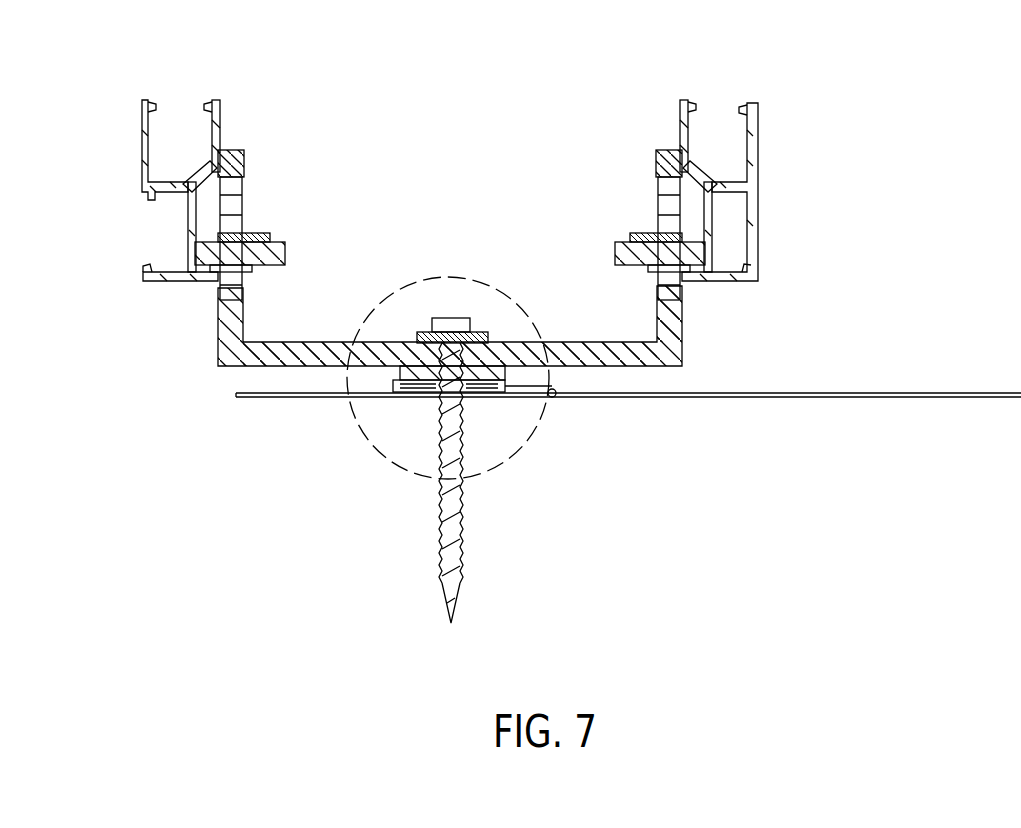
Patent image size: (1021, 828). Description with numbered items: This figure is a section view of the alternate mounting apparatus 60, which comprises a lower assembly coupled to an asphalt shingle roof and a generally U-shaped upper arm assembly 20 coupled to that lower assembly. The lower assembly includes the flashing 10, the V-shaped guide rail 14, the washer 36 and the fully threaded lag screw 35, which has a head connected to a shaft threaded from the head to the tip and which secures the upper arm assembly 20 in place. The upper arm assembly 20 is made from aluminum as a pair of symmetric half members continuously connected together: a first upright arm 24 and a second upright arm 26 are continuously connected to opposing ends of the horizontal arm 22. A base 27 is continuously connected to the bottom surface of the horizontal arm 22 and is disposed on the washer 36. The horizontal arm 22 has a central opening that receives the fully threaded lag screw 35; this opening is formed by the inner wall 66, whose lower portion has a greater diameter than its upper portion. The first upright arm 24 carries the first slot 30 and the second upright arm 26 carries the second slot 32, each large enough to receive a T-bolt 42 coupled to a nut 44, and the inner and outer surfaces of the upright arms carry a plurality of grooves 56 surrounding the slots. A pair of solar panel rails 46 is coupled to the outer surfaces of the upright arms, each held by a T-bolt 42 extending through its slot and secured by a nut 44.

The flashing 10 is at (258, 400).
The V-shaped guide rail 14 is at (553, 398).
The upper arm assembly 20 is at (200, 360).
The horizontal arm 22 is at (617, 340).
The first upright arm 24 is at (222, 160).
The second upright arm 26 is at (668, 152).
The base 27 is at (500, 378).
The first slot 30 is at (243, 213).
The second slot 32 is at (676, 203).
The fully threaded lag screw 35 is at (450, 320).
The washer 36 is at (482, 392).
The T-bolt 42 is at (283, 256).
The nut 44 is at (266, 238).
The solar panel rail 46 is at (142, 100).
The grooves 56 is at (246, 165).
The alternate mounting apparatus 60 is at (252, 500).
The inner wall 66 is at (440, 372).